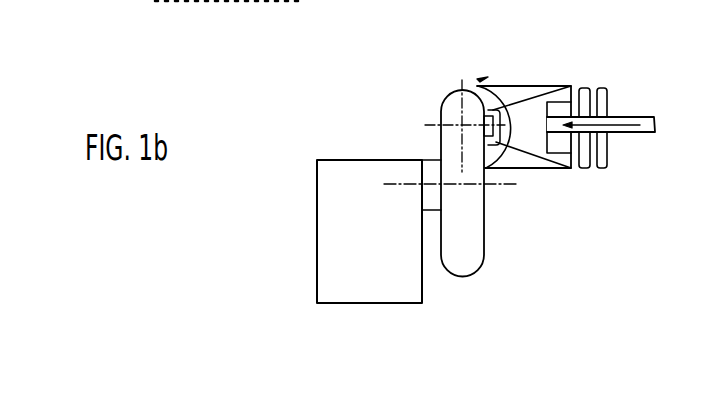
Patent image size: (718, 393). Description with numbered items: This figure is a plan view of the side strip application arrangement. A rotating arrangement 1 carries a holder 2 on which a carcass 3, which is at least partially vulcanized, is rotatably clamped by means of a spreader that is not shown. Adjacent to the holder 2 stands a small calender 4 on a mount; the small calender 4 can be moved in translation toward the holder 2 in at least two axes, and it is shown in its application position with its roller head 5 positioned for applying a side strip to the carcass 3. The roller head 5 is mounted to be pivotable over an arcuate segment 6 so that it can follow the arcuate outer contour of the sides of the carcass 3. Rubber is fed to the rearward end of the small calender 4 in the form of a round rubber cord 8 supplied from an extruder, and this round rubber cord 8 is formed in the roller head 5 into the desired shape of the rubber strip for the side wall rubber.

The rotating arrangement 1 is at (332, 234).
The holder 2 is at (428, 177).
The carcass 3 is at (466, 262).
The small calender 4 is at (546, 86).
The roller head 5 is at (477, 83).
The arcuate segment 6 is at (517, 87).
The round rubber cord 8 is at (647, 120).